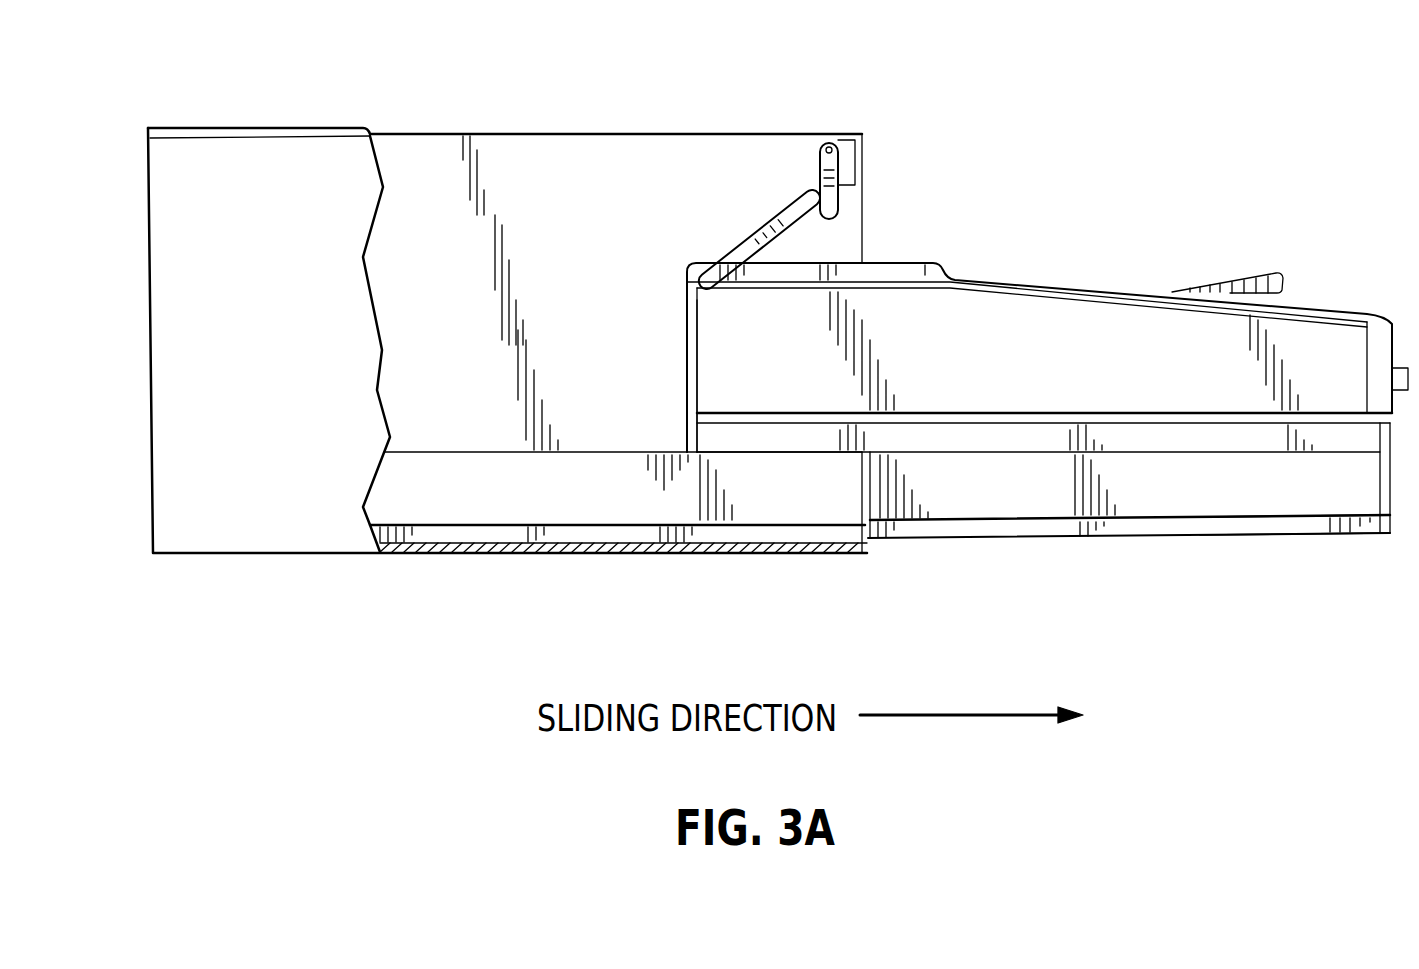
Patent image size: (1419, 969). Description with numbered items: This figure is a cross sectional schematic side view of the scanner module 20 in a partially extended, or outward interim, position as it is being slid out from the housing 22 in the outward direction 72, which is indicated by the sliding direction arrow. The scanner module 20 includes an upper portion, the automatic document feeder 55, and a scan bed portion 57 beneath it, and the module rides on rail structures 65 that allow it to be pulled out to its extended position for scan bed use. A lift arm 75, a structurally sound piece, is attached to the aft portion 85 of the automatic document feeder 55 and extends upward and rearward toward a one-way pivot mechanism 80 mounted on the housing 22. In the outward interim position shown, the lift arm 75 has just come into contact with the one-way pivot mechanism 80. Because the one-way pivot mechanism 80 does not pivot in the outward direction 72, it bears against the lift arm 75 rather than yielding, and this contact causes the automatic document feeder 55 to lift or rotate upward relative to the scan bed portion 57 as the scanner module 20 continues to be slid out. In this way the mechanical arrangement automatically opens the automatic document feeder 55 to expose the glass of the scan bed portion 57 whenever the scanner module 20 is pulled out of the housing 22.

The scanner module 20 is at (1130, 542).
The housing 22 is at (502, 131).
The automatic document feeder 55 is at (1062, 278).
The scan bed portion 57 is at (1322, 522).
The rail structures 65 is at (737, 482).
The outward direction 72 is at (945, 712).
The lift arm 75 is at (765, 222).
The one-way pivot mechanism 80 is at (830, 140).
The aft portion 85 is at (680, 313).